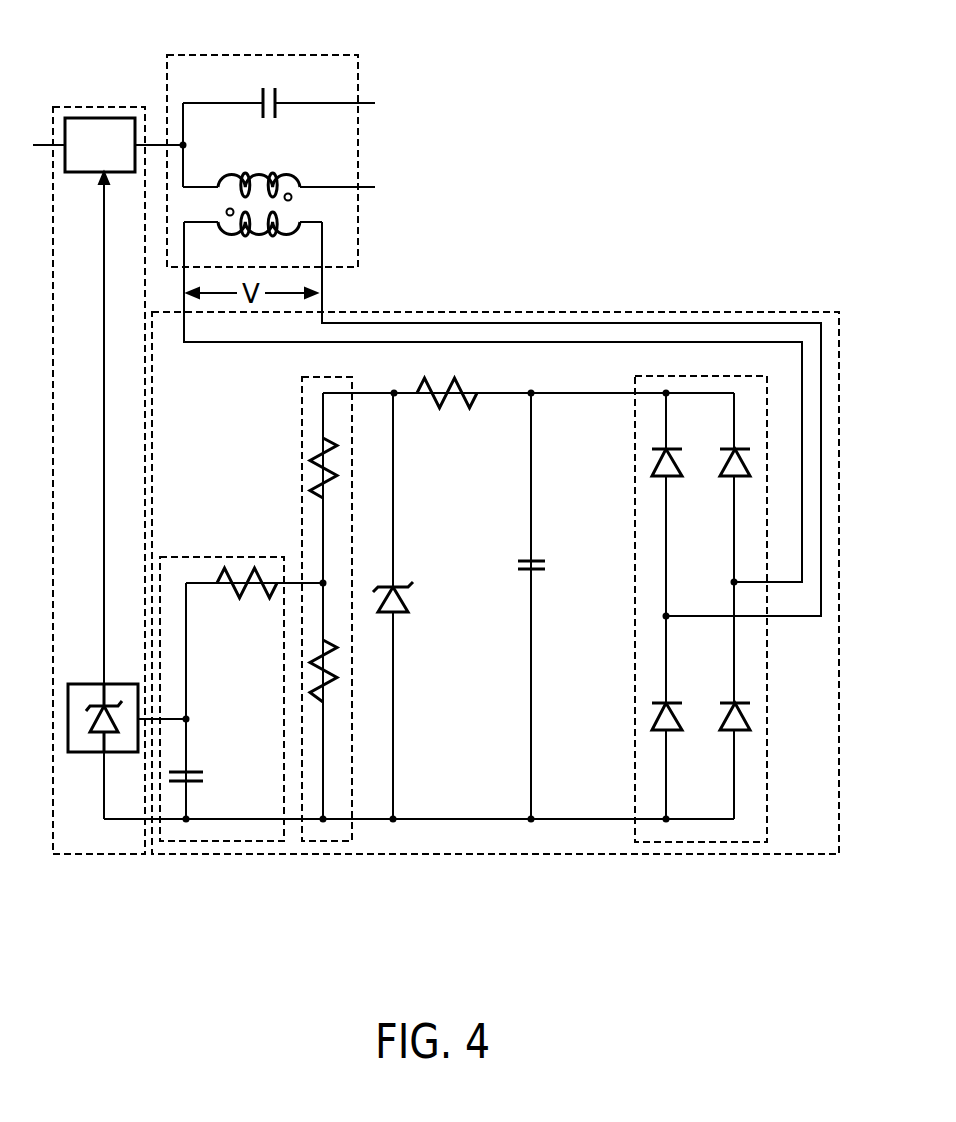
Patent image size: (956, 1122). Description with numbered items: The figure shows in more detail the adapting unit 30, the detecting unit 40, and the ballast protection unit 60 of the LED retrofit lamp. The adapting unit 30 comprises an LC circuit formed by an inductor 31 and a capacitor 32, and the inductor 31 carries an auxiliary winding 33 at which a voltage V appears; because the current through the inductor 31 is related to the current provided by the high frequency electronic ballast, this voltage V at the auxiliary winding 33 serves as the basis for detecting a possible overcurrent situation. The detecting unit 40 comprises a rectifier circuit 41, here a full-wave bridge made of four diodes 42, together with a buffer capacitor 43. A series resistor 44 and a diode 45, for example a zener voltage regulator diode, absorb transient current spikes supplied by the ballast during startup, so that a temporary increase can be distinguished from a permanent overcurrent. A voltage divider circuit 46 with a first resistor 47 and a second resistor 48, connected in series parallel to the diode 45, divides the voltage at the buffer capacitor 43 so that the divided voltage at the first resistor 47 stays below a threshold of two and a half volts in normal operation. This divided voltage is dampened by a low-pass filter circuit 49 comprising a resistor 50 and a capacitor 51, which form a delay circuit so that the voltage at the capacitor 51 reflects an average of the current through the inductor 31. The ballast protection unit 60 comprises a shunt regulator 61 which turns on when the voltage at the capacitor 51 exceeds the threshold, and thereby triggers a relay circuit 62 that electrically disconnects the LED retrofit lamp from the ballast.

The adapting unit 30 is at (358, 74).
The inductor 31 is at (297, 173).
The capacitor 32 is at (262, 91).
The auxiliary winding 33 is at (300, 238).
The detecting unit 40 is at (752, 312).
The rectifier circuit 41 is at (710, 842).
The diode 42 is at (652, 462).
The buffer capacitor 43 is at (536, 560).
The series resistor 44 is at (463, 390).
The diode 45 is at (408, 598).
The voltage divider circuit 46 is at (327, 841).
The first resistor 47 is at (312, 655).
The second resistor 48 is at (315, 460).
The low-pass filter circuit 49 is at (218, 841).
The resistor 50 is at (218, 577).
The capacitor 51 is at (197, 772).
The ballast protection unit 60 is at (53, 517).
The shunt regulator 61 is at (78, 753).
The relay circuit 62 is at (94, 118).